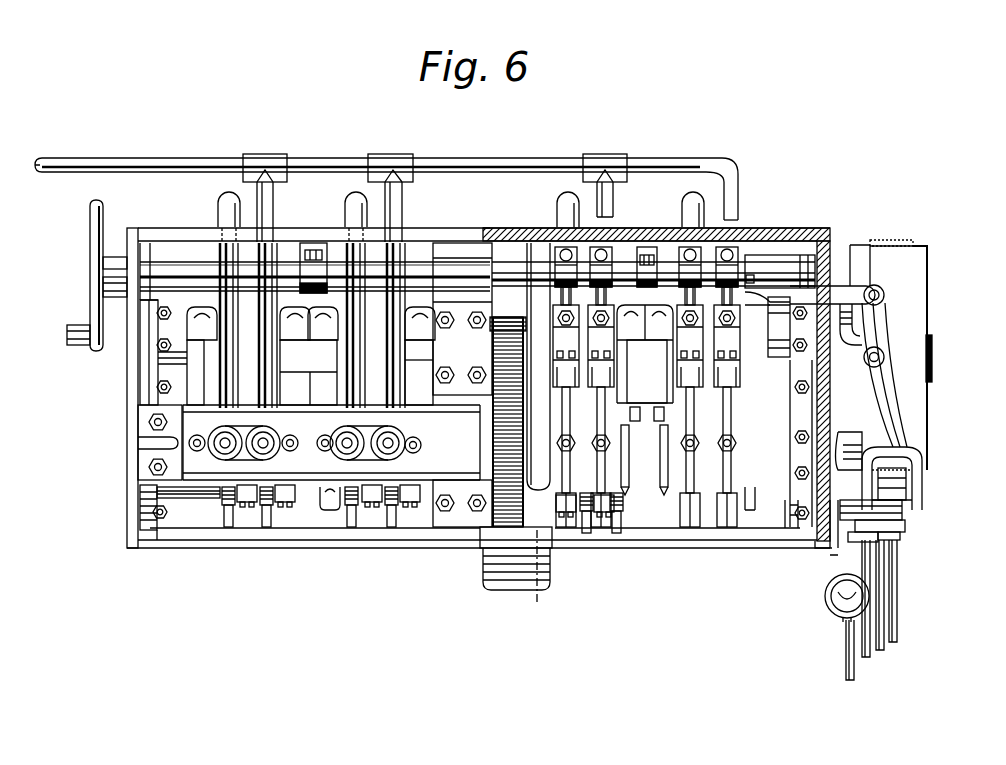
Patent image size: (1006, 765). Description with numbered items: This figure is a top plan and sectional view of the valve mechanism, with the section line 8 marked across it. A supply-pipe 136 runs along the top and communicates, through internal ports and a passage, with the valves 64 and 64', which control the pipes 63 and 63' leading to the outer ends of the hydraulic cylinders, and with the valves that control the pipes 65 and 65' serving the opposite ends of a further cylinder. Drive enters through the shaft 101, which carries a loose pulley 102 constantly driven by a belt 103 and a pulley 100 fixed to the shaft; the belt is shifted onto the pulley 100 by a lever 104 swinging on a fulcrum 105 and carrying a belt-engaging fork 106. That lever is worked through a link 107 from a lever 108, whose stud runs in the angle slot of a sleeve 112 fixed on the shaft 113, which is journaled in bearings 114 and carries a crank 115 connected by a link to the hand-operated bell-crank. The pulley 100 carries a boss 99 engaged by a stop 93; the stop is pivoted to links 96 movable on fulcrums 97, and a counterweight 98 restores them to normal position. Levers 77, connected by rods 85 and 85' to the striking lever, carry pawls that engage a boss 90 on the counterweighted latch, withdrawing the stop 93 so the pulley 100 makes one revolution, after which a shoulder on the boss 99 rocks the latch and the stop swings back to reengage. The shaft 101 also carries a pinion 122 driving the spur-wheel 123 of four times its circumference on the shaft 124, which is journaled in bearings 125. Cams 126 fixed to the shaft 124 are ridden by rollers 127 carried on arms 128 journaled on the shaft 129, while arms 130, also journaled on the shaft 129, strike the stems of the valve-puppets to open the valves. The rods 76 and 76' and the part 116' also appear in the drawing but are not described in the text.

The supply-pipe 136 is at (522, 160).
The section line 8 8 is at (582, 158).
The pipe 63' is at (204, 217).
The pipe 63 is at (341, 211).
The pipe 65 is at (550, 207).
The pipe 65' is at (679, 198).
The shaft 113 is at (418, 270).
The bearings 114 is at (530, 234).
The shaft 129 is at (493, 320).
The pinion 122 is at (503, 328).
The spur-wheel 123 is at (505, 530).
The valve 64' is at (258, 442).
The valve 64 is at (405, 442).
The bearings 125 is at (178, 500).
The rollers 127 is at (226, 493).
The cams 126 is at (250, 505).
The arms 130 is at (606, 428).
The shaft 124 is at (638, 465).
The arms 128 is at (654, 499).
The sleeve 112 is at (780, 264).
The lever 108 is at (786, 327).
The pulley 100 is at (858, 248).
The belt 103 is at (908, 240).
The loose pulley 102 is at (930, 292).
The shaft 101 is at (934, 353).
The link 107 is at (862, 292).
The lever 104 is at (889, 412).
The fulcrum 105 is at (886, 355).
The stop 93 is at (840, 444).
The boss 99 is at (893, 442).
The belt-engaging fork 106 is at (920, 483).
The boss 90 is at (858, 527).
The levers 77 is at (904, 536).
The fulcrums 97 is at (877, 530).
The links 96 is at (827, 553).
The rod 85' is at (831, 665).
The rod 85 is at (868, 631).
The rod 76 is at (897, 625).
The rod 76' is at (915, 604).
The counterweight 98 is at (827, 606).
The crank 116' is at (85, 290).
The crank 115 is at (67, 336).